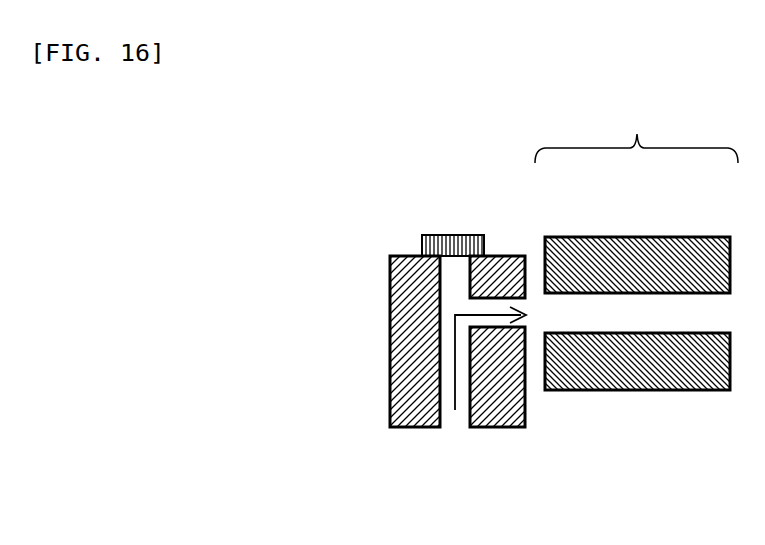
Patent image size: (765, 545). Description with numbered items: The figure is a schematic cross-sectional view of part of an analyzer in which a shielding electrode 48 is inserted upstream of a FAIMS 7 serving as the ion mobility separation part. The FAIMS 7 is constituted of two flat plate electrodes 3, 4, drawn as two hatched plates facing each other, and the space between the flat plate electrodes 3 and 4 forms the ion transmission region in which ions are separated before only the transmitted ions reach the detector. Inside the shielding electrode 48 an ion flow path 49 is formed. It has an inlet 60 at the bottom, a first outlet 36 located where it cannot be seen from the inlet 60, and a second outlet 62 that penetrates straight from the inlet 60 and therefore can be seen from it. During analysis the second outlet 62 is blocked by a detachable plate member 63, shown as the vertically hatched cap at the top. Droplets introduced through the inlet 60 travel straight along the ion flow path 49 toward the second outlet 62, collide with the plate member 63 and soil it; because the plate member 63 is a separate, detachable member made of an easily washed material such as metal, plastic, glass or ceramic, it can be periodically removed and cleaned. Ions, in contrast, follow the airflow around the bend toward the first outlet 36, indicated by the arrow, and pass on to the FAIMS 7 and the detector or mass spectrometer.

The FAIMS 7 is at (636, 134).
The flat plate electrode 3 is at (631, 237).
The flat plate electrode 4 is at (640, 390).
The shielding electrode 48 is at (406, 320).
The second outlet 62 is at (460, 281).
The plate member 63 is at (447, 235).
The first outlet 36 is at (527, 320).
The ion flow path 49 is at (447, 374).
The inlet 60 is at (453, 432).